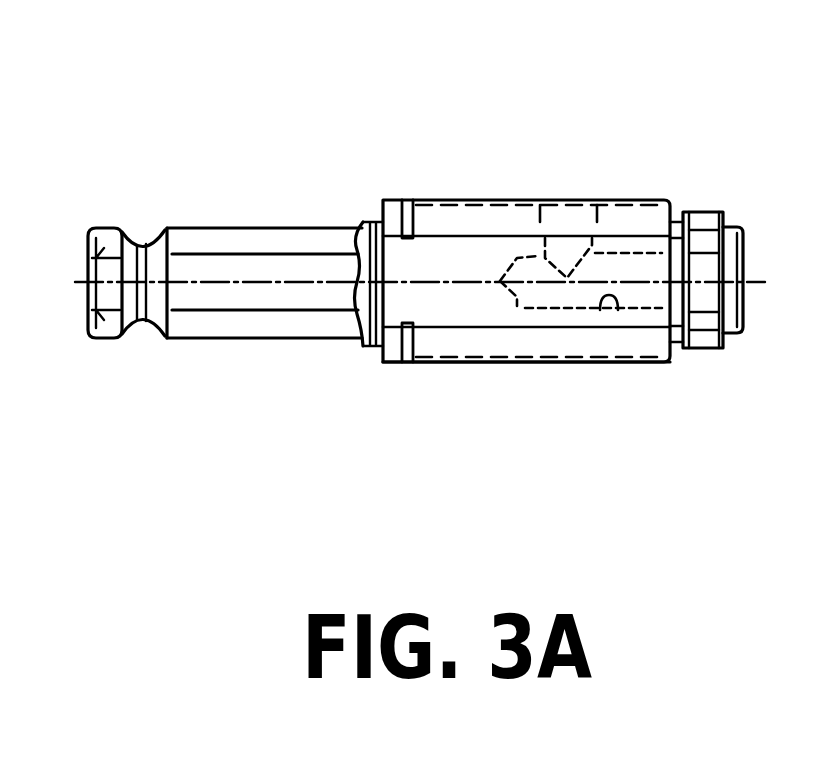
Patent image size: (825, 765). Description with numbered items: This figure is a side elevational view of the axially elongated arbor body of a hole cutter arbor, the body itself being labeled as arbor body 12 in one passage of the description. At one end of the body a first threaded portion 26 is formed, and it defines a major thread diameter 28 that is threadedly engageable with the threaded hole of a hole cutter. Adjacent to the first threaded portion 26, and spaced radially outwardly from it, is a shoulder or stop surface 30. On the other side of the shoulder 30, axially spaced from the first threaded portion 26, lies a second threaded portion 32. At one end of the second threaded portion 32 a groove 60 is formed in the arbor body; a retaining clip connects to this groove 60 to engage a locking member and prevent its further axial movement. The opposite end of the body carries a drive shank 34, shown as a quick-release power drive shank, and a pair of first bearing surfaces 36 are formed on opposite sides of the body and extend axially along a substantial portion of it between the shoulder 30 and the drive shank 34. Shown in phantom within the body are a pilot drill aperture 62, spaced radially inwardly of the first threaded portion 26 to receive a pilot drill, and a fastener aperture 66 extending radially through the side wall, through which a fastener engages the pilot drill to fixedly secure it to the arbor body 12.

The hole cutter 12 is at (322, 140).
The first threaded portion 26 is at (703, 350).
The major thread diameter 28 is at (720, 356).
The shoulder 30 is at (672, 207).
The second threaded portion 32 is at (448, 363).
The drive shank 34 is at (187, 339).
The first bearing surfaces 36 is at (458, 262).
The groove 60 is at (405, 198).
The pilot drill aperture 62 is at (616, 305).
The fastener aperture 66 is at (573, 198).